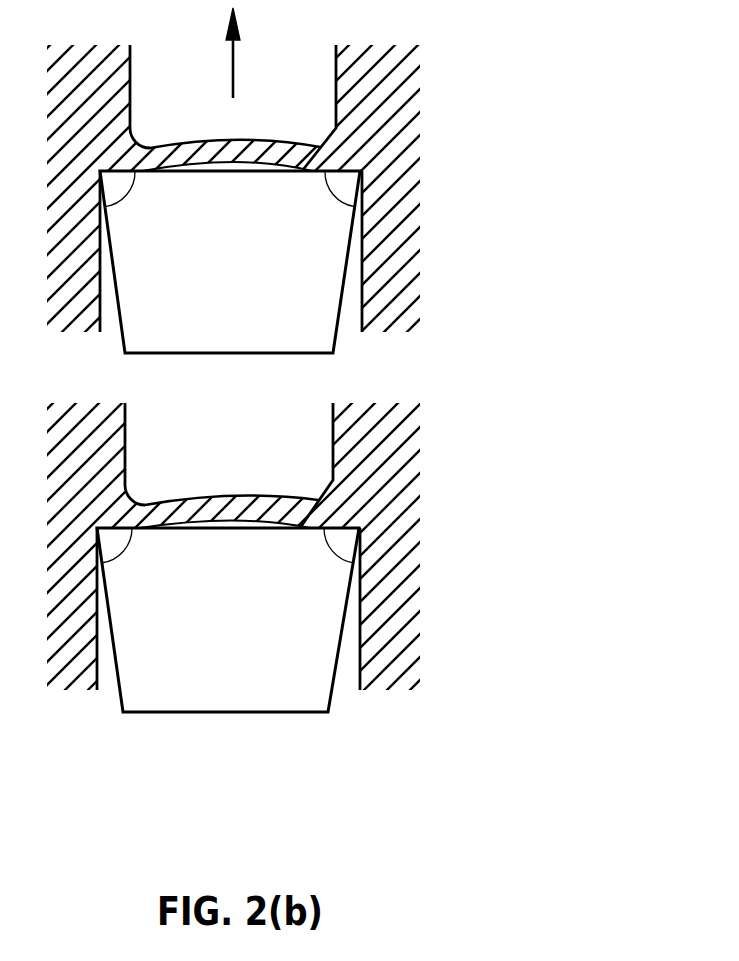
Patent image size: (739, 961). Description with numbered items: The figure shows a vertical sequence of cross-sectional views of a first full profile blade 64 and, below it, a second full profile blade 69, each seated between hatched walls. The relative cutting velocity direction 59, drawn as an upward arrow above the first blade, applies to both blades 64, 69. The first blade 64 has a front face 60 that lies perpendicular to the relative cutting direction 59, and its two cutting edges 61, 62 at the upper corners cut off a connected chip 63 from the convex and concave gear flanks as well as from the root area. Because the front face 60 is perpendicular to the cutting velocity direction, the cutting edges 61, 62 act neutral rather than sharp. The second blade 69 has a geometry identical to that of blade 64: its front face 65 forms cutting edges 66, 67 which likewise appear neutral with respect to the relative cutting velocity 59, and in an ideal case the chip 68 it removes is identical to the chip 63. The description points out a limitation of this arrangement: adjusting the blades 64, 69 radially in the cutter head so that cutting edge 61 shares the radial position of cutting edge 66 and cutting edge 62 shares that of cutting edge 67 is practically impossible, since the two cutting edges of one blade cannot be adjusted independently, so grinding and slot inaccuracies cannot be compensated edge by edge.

The relative cutting velocity direction 59 is at (255, 53).
The front face 60 is at (231, 157).
The cutting edge 61 is at (338, 203).
The cutting edge 62 is at (130, 203).
The chip 63 is at (217, 146).
The full profile blade 64 is at (230, 287).
The front face 65 is at (230, 517).
The cutting edge 66 is at (336, 561).
The cutting edge 67 is at (130, 560).
The chip 68 is at (213, 503).
The second full profile blade 69 is at (228, 644).